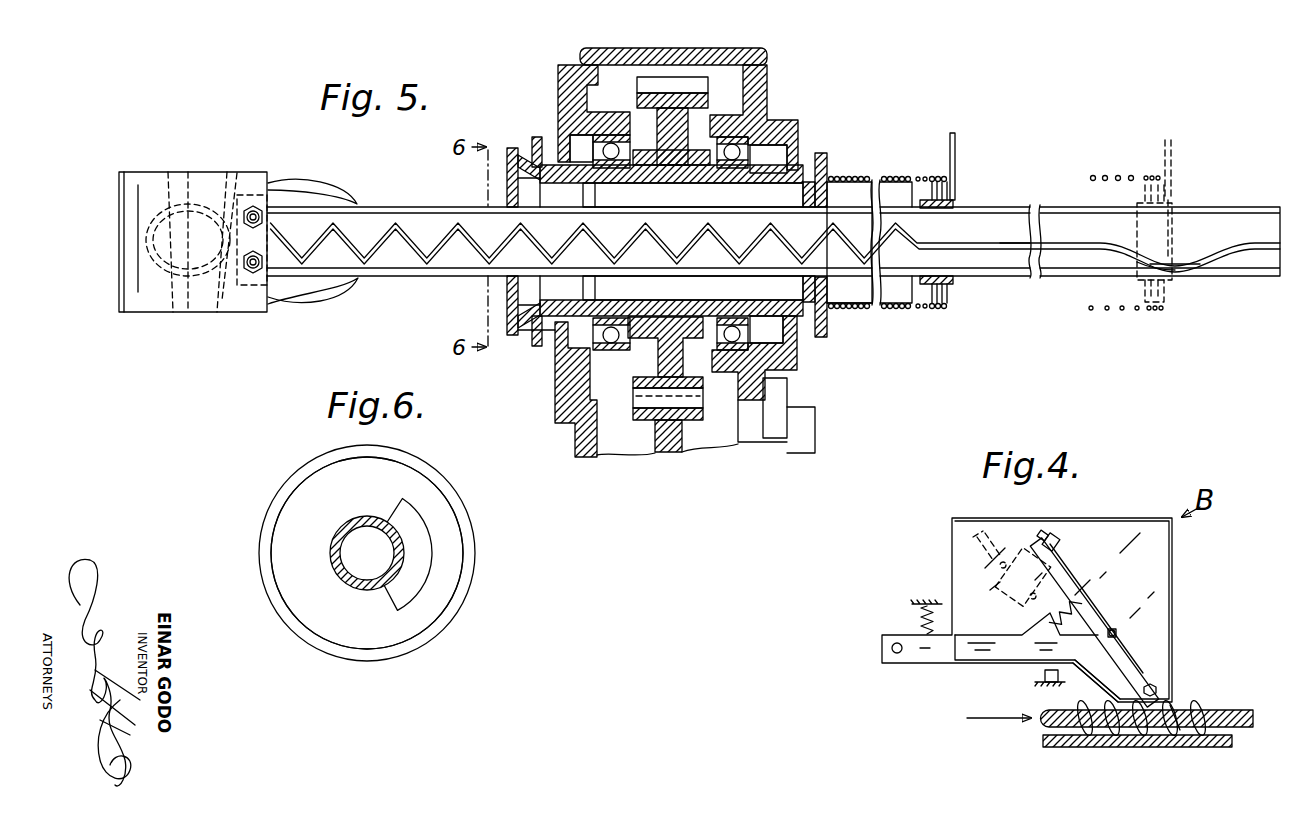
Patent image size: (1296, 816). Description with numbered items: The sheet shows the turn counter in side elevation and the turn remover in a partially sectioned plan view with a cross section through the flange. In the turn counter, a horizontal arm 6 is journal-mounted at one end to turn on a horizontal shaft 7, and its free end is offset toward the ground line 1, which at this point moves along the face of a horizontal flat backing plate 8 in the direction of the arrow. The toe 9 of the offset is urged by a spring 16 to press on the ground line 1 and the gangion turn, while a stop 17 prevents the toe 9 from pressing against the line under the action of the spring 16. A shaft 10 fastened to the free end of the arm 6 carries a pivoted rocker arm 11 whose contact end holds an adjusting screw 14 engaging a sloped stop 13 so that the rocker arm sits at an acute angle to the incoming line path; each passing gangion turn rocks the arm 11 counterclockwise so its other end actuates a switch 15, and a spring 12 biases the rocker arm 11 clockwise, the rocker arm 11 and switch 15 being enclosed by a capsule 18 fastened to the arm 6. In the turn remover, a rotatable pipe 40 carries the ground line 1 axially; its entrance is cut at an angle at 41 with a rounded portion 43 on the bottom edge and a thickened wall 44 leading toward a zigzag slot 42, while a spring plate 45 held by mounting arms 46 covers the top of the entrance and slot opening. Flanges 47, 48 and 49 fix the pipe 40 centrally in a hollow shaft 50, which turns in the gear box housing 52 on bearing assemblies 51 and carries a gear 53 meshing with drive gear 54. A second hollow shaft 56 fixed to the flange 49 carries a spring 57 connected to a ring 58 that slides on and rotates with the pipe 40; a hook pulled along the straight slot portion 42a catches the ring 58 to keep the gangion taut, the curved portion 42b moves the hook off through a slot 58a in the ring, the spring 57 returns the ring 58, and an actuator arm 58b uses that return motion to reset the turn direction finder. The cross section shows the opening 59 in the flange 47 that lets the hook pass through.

In FIG. 5, the rotatable pipe 40 is at (421, 207).
In FIG. 6, the rotatable pipe 40 is at (337, 572).
In FIG. 5, the slot 42 is at (418, 262).
In FIG. 6, the slot 42 is at (403, 553).
In FIG. 5, the straight line portion 42a is at (1014, 252).
In FIG. 5, the curved portion 42b is at (1192, 272).
In FIG. 5, the angled entrance 41 is at (181, 312).
In FIG. 5, the rounded portion 43 is at (174, 163).
In FIG. 5, the thickened wall 44 is at (237, 175).
In FIG. 5, the spring plate 45 is at (202, 182).
In FIG. 5, the mounting arms 46 is at (313, 183).
In FIG. 5, the flange 47 is at (511, 148).
In FIG. 6, the flange 47 is at (397, 478).
In FIG. 5, the flange 48 is at (803, 193).
In FIG. 5, the flange 49 is at (821, 155).
In FIG. 5, the hollow shaft 50 is at (557, 322).
In FIG. 5, the bearing assemblies 51 is at (588, 137).
In FIG. 5, the gear box housing 52 is at (680, 48).
In FIG. 5, the gear 53 is at (720, 98).
In FIG. 5, the drive gear 54 is at (653, 430).
In FIG. 5, the second hollow shaft 56 is at (850, 310).
In FIG. 5, the spring 57 is at (855, 177).
In FIG. 5, the ring 58 is at (952, 202).
In FIG. 5, the slot in ring 58a is at (1167, 257).
In FIG. 5, the actuator arm 58b is at (950, 173).
In FIG. 6, the opening 59 is at (413, 582).
In FIG. 4, the capsule 18 is at (1172, 588).
In FIG. 4, the horizontal arm 6 is at (985, 652).
In FIG. 4, the horizontal shaft 7 is at (895, 653).
In FIG. 4, the spring 16 is at (918, 615).
In FIG. 4, the rocker arm 11 is at (1093, 607).
In FIG. 4, the spring 12 is at (1066, 595).
In FIG. 4, the shaft 10 is at (1116, 633).
In FIG. 4, the switch 15 is at (1008, 587).
In FIG. 4, the sloped stop 13 is at (1120, 680).
In FIG. 4, the stop 17 is at (1045, 677).
In FIG. 4, the adjusting screw 14 is at (1158, 688).
In FIG. 4, the ground line 1 is at (1250, 710).
In FIG. 4, the horizontal flat backing plate 8 is at (1167, 747).
In FIG. 4, the toe 9 is at (1120, 738).